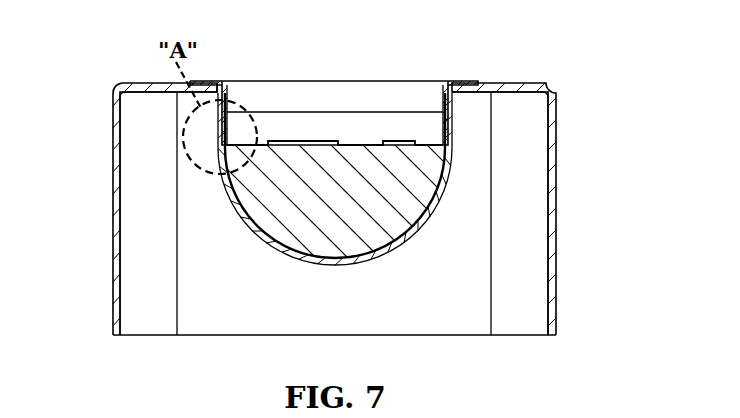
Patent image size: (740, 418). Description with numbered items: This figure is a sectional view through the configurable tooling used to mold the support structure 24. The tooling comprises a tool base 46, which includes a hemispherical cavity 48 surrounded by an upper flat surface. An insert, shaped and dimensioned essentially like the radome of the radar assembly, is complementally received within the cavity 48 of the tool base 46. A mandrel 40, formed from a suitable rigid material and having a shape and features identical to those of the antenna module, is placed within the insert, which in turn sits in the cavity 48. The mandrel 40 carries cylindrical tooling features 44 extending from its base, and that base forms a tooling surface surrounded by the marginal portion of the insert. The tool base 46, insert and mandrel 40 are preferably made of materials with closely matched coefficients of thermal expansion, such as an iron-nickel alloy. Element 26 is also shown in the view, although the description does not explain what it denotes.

The support structure 24 is at (278, 127).
The flange 26 is at (457, 81).
The mandrel 40 is at (400, 185).
The cylindrical tooling features 44 is at (310, 142).
The tool base 46 is at (147, 187).
The hemispherical cavity 48 is at (44, 417).